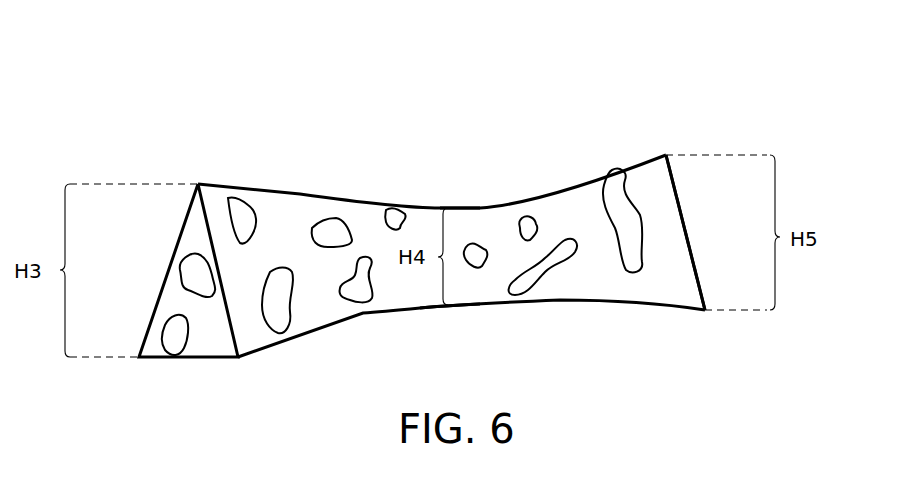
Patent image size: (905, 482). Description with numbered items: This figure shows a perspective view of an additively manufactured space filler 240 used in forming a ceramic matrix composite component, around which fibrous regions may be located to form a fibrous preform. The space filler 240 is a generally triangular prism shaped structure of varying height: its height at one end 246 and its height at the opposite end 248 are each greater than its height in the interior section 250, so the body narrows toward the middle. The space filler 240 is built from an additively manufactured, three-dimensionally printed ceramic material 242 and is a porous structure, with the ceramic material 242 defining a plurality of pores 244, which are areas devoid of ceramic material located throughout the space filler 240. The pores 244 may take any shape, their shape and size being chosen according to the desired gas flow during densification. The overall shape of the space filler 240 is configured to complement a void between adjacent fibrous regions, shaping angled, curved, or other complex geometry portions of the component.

The space filler 240 is at (246, 98).
The ceramic material 242 is at (298, 254).
The pores 244 is at (170, 345).
The end 246 is at (198, 184).
The end 248 is at (666, 155).
The interior section 250 is at (490, 170).